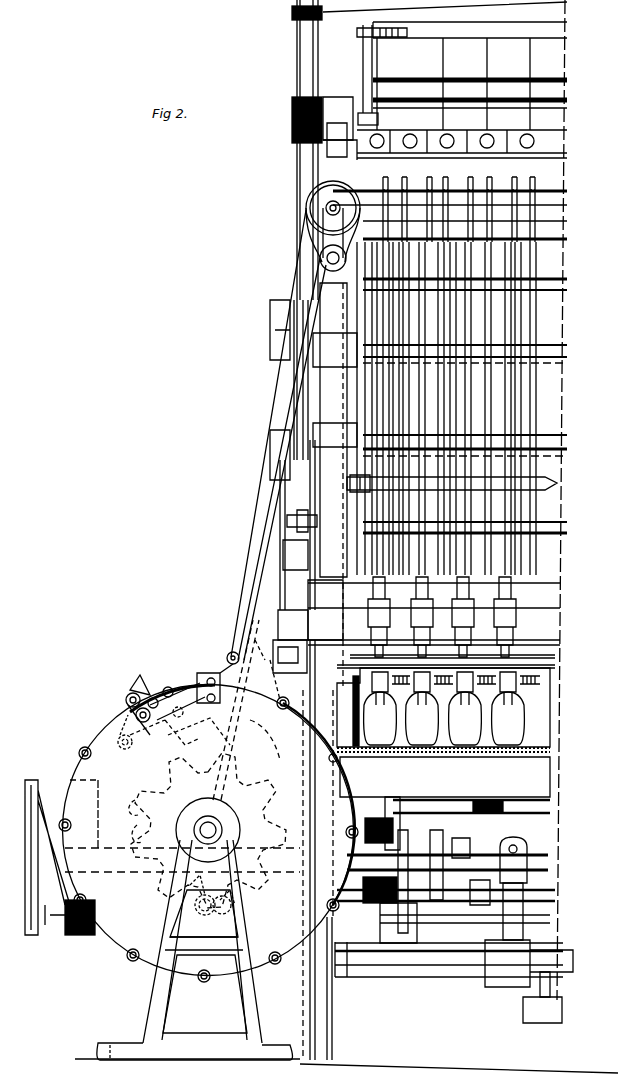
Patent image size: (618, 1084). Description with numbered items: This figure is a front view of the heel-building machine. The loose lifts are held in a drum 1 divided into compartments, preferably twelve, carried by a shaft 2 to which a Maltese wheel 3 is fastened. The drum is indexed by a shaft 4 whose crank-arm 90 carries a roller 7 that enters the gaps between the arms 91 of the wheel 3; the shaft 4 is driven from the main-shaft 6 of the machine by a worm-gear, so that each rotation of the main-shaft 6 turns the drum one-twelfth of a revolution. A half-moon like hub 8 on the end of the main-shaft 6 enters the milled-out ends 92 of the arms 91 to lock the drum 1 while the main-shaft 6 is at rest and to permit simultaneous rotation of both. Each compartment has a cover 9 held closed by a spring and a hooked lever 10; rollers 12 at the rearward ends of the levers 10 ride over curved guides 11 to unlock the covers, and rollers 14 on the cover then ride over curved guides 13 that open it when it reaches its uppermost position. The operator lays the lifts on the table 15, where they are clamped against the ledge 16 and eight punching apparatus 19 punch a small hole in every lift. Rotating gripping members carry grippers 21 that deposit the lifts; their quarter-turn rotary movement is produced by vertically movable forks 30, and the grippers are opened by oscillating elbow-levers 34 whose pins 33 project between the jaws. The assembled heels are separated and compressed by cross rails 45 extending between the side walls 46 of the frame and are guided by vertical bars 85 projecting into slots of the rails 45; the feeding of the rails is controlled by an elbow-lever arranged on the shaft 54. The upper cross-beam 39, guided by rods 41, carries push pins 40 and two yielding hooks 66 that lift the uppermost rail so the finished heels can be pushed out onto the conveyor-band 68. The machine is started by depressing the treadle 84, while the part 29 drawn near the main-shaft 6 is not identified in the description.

The drum 1 is at (108, 938).
The shaft 2 is at (216, 826).
The Maltese wheel 3 is at (270, 790).
The shaft 4 is at (195, 908).
The main-shaft 6 is at (478, 860).
The roller 7 is at (232, 898).
The half-moon like hub 8 is at (190, 898).
The cover 9 is at (190, 680).
The hooked lever 10 is at (133, 693).
The curved guides 11 is at (178, 738).
The rollers 12 is at (120, 730).
The curved guides 13 is at (240, 665).
The rollers 14 is at (228, 652).
The table 15 is at (555, 668).
The ledge 16 is at (555, 657).
The punching apparatus 19 is at (512, 652).
The grippers 21 is at (516, 698).
The bracket 29 is at (527, 845).
The forks 30 is at (353, 700).
The pins 33 is at (520, 680).
The elbow-levers 34 is at (445, 692).
The upper cross-beam 39 is at (504, 38).
The push pins 40 is at (478, 58).
The rods 41 is at (300, 58).
The cross rails 45 is at (558, 483).
The side walls 46 is at (320, 480).
The shaft 54 is at (442, 792).
The yielding hooks 66 is at (365, 53).
The conveyor-band 68 is at (288, 150).
The treadle 84 is at (562, 1010).
The vertical bars 85 is at (385, 416).
The crank-arm 90 is at (230, 912).
The arms 91 is at (133, 806).
The ends 92 is at (135, 832).